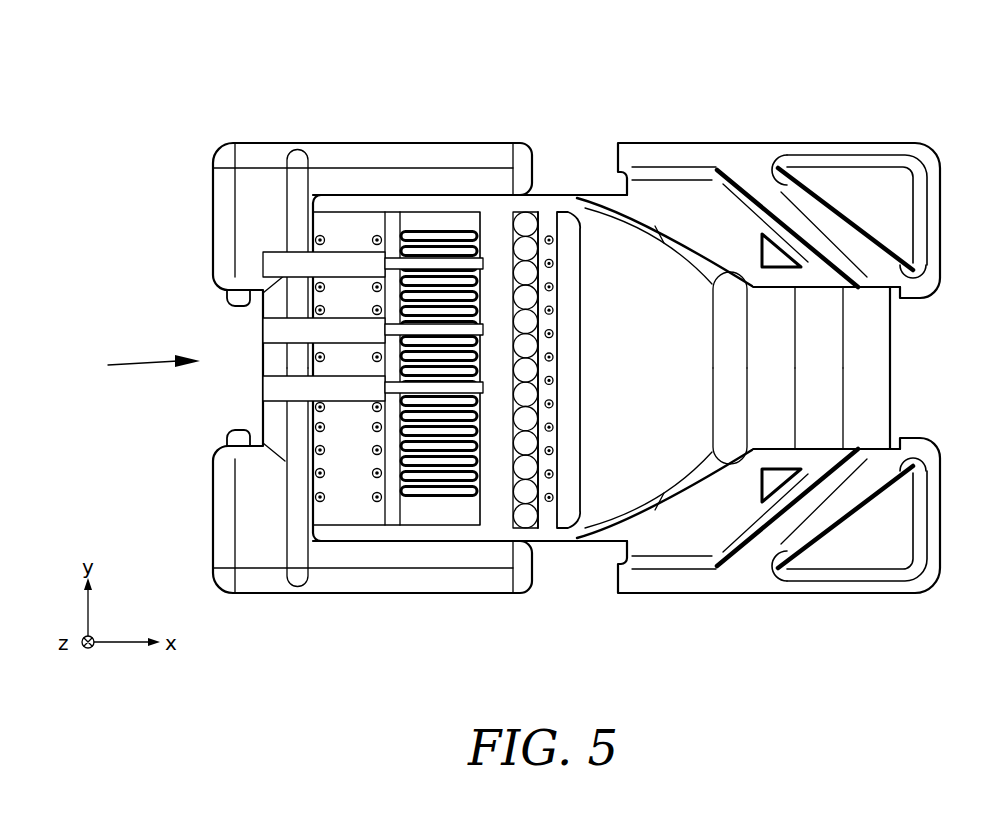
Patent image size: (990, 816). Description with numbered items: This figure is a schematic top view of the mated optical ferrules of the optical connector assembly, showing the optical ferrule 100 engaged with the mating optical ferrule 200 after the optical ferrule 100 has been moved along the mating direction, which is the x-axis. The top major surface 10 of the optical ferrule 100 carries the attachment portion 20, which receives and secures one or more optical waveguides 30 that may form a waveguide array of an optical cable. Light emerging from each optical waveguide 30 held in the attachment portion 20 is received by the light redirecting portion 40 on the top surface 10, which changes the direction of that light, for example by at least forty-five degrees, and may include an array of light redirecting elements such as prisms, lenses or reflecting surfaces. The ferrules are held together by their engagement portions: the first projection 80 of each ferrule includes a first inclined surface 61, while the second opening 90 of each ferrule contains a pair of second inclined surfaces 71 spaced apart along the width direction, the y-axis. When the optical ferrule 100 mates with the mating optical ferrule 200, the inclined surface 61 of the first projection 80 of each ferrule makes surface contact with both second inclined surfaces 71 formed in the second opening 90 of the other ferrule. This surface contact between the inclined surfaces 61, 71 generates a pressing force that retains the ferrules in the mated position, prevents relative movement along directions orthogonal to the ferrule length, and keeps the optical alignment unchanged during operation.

The top major surface 10 is at (493, 216).
The attachment portion 20 is at (423, 500).
The optical waveguide 30 is at (397, 226).
The light redirecting portion 40 is at (533, 500).
The first inclined surface 61 is at (870, 400).
The second inclined surfaces 71 is at (240, 295).
The first projection 80 is at (823, 328).
The second opening 90 is at (135, 366).
The optical ferrule 100 is at (410, 146).
The mating optical ferrule 200 is at (748, 158).